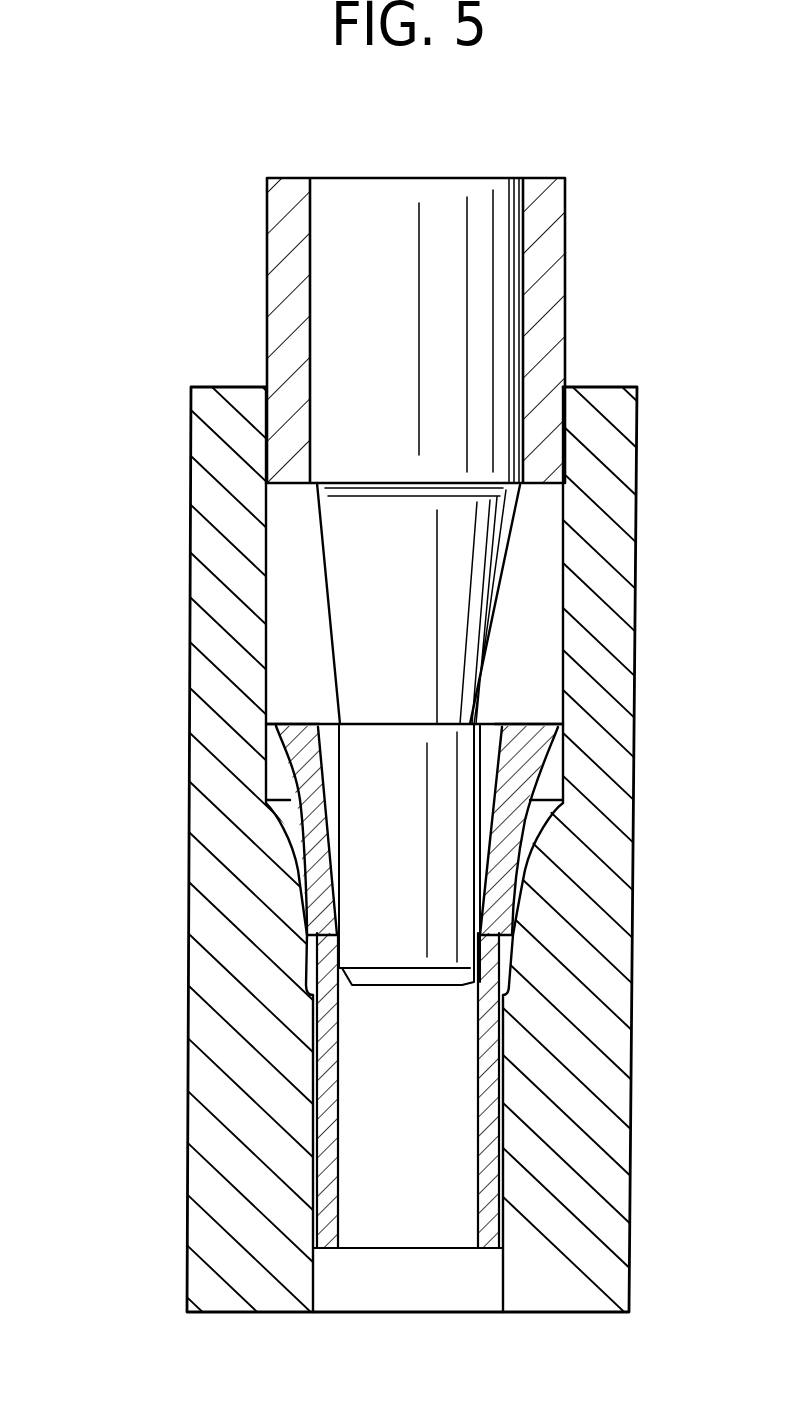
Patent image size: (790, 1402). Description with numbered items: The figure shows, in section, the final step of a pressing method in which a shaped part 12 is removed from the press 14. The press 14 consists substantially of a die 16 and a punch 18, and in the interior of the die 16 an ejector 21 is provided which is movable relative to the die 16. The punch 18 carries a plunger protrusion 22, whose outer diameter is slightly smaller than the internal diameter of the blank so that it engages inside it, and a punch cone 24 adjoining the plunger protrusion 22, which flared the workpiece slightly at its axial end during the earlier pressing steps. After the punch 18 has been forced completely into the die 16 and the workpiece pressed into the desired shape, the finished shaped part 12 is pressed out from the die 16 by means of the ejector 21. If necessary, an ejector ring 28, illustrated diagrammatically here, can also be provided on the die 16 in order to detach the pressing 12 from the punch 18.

The press 14 is at (178, 908).
The die 16 is at (601, 577).
The ejector ring 28 is at (540, 246).
The punch 18 is at (478, 215).
The punch cone 24 is at (350, 572).
The shaped part 12 is at (510, 770).
The plunger protrusion 22 is at (443, 897).
The ejector 21 is at (493, 1118).